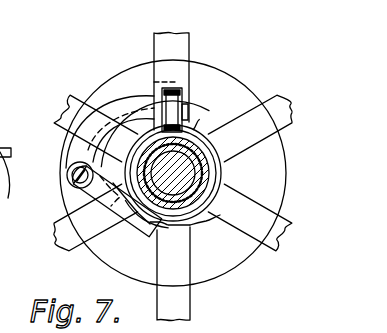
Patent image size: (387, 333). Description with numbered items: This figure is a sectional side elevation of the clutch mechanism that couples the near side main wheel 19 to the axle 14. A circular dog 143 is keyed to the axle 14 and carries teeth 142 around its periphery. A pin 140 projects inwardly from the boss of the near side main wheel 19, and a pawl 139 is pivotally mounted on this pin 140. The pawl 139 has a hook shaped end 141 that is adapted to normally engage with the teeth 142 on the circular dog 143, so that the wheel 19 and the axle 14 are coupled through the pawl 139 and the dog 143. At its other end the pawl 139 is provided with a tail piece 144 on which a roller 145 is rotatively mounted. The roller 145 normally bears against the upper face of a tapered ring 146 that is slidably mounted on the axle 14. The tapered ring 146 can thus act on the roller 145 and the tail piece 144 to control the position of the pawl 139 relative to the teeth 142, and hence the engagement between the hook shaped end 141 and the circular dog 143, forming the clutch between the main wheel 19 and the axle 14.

The axle 14 is at (206, 201).
The near side main wheel 19 is at (72, 235).
The pawl 139 is at (63, 210).
The pin 140 is at (67, 177).
The hook shaped end 141 is at (170, 232).
The teeth 142 is at (216, 165).
The circular dog 143 is at (194, 127).
The tail piece 144 is at (118, 122).
The roller 145 is at (178, 85).
The tapered ring 146 is at (194, 148).